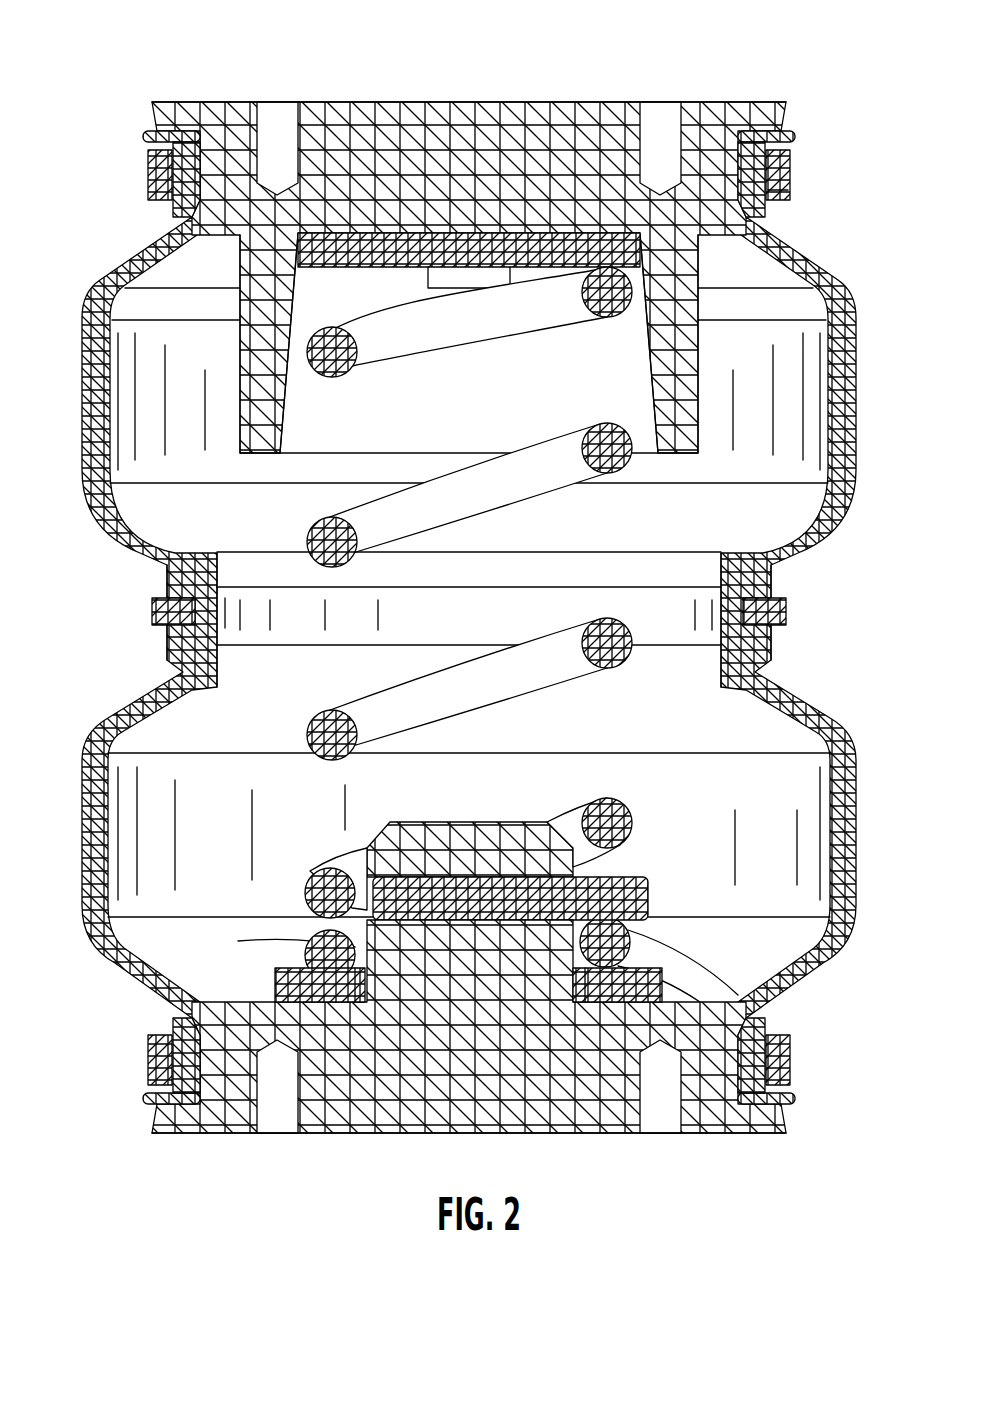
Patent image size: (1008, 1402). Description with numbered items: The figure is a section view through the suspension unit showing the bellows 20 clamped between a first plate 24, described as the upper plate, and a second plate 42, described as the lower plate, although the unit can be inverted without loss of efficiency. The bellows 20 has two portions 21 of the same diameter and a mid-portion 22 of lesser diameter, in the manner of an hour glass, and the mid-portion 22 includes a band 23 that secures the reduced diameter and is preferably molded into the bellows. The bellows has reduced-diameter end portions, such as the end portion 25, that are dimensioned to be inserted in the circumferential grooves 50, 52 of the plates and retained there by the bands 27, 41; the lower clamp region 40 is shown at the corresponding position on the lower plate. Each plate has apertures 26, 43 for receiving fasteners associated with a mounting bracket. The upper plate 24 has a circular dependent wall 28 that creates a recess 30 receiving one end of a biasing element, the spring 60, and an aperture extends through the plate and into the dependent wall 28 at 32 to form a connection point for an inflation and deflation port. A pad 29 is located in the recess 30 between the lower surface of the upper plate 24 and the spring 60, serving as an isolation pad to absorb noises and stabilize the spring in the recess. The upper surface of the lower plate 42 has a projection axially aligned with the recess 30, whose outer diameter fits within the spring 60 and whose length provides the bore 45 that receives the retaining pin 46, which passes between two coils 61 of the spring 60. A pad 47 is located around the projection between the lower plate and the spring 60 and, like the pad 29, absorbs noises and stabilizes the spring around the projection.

The bellows 20 is at (68, 658).
The portions 21 is at (845, 323).
The mid-portion 22 is at (183, 583).
The band 23 is at (165, 612).
The first plate 24 is at (718, 102).
The end portion 25 is at (192, 170).
The aperture 26 is at (280, 118).
The band 27 is at (777, 188).
The dependent wall 28 is at (680, 368).
The pad 29 is at (313, 265).
The recess 30 is at (521, 402).
The aperture extension 32 is at (455, 282).
The lower clamp 40 is at (187, 1055).
The band 41 is at (148, 1067).
The second plate 42 is at (722, 1127).
The aperture 43 is at (278, 1127).
The bore 45 is at (473, 877).
The retaining pin 46 is at (633, 905).
The pad 47 is at (645, 980).
The circumferential groove 50 is at (197, 132).
The circumferential groove 52 is at (195, 1095).
The spring 60 is at (318, 768).
The coils 61 is at (603, 822).